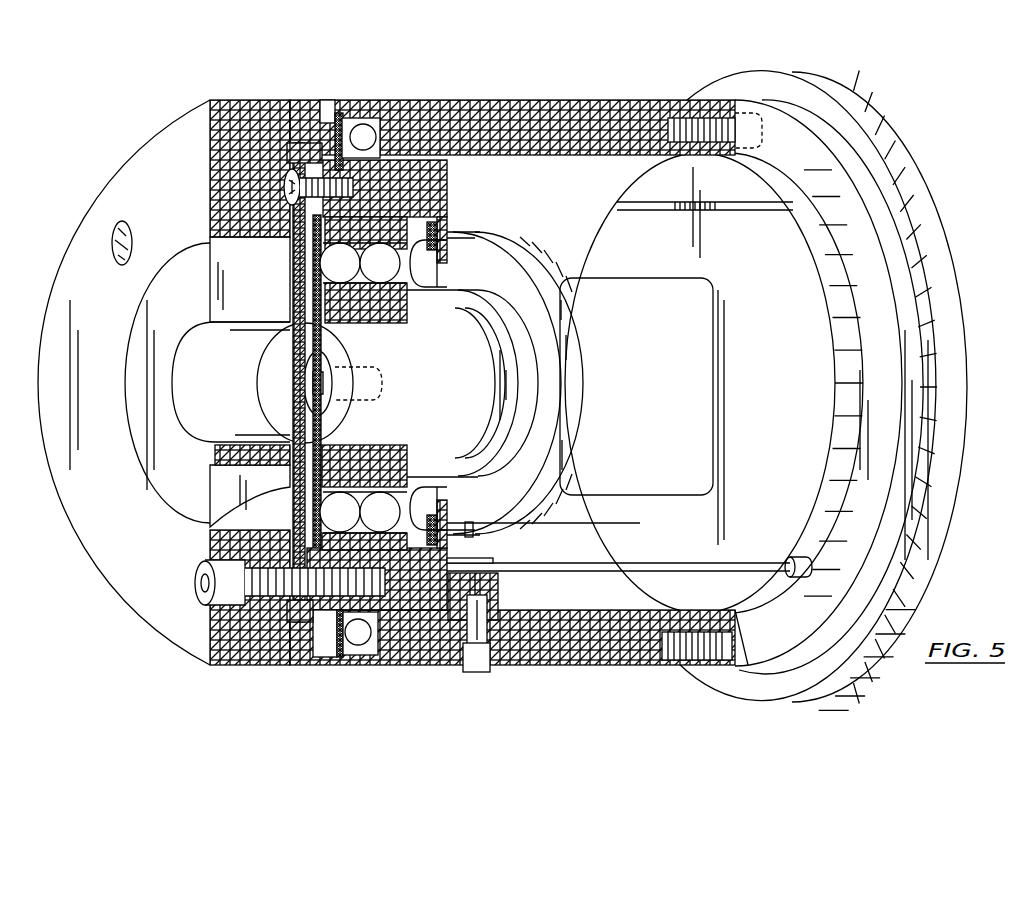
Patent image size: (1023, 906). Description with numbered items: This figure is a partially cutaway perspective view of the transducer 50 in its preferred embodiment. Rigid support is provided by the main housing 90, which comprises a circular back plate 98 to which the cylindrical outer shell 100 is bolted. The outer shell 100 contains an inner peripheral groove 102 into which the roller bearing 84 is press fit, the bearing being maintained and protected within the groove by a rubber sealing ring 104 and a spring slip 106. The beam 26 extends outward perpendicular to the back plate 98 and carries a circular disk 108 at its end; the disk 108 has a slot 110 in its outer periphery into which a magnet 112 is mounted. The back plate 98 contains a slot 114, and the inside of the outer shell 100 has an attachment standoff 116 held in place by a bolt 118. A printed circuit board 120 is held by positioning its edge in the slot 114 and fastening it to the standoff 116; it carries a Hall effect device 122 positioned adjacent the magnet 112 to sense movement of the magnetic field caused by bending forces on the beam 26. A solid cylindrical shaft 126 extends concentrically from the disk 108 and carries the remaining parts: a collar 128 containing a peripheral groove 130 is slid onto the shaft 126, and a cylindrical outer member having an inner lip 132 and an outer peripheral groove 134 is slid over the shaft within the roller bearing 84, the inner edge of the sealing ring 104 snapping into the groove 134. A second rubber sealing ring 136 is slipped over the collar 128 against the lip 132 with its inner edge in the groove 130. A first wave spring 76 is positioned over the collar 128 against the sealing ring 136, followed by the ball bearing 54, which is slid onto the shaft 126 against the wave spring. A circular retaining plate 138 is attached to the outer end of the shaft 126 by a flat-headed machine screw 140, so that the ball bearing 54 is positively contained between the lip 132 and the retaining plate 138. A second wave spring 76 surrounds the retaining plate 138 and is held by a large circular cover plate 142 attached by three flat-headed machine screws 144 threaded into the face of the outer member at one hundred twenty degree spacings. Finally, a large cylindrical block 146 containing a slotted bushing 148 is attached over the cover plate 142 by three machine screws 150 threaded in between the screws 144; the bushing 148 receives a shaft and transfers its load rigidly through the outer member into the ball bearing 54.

The beam 26 is at (655, 488).
The rotor assembly 50 is at (655, 78).
The ball bearing 54 is at (323, 302).
The wave spring 76 is at (313, 238).
The roller bearing 84 is at (362, 130).
The main housing 90 is at (828, 76).
The circular back plate 98 is at (945, 272).
The cylindrical outer shell 100 is at (556, 364).
The inner peripheral groove 102 is at (350, 125).
The rubber sealing ring 104 is at (300, 145).
The spring slip 106 is at (316, 143).
The circular disk 108 is at (536, 234).
The slot 110 is at (475, 530).
The magnet 112 is at (458, 560).
The slot 114 is at (808, 548).
The attachment standoff 116 is at (498, 594).
The bolt 118 is at (476, 673).
The printed circuit board 120 is at (632, 571).
The Hall effect device 122 is at (442, 560).
The solid cylindrical shaft 126 is at (472, 282).
The collar 128 is at (510, 337).
The peripheral groove 130 is at (493, 387).
The inner lip 132 is at (445, 238).
The outer peripheral groove 134 is at (392, 172).
The second rubber sealing ring 136 is at (553, 446).
The circular retaining plate 138 is at (213, 457).
The flat-headed machine screw 140 is at (303, 417).
The large circular cover plate 142 is at (212, 525).
The flat-headed machine screws 144 is at (287, 181).
The large cylindrical block 146 is at (115, 178).
The slotted bushing 148 is at (157, 318).
The machine screws 150 is at (232, 578).